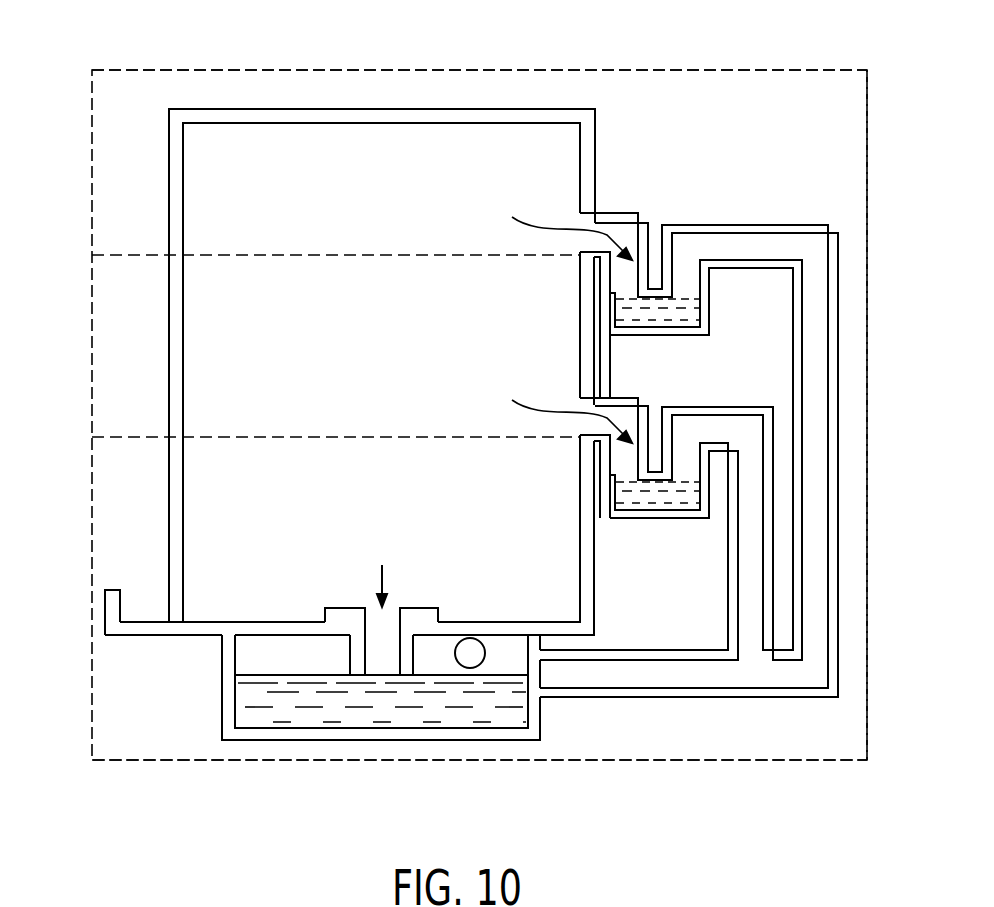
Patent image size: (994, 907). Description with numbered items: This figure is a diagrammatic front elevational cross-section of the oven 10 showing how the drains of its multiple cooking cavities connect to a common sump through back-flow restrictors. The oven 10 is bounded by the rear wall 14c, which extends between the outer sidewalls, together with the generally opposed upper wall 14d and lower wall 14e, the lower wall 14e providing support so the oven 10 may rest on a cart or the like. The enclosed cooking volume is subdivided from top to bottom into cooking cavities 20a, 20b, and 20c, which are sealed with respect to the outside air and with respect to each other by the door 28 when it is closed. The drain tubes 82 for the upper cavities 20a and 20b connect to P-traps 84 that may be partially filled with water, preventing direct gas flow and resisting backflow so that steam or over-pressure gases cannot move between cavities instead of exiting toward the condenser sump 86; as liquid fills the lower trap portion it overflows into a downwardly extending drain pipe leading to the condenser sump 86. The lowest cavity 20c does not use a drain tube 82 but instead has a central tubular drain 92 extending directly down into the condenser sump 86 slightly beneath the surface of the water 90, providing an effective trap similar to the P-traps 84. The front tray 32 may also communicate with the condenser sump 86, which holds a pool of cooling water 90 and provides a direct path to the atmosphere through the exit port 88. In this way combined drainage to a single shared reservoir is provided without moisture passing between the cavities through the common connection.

The oven 10 is at (835, 61).
The rear wall 14c is at (867, 160).
The upper wall 14d is at (480, 68).
The lower wall 14e is at (537, 762).
The cooking cavity 20a is at (537, 178).
The cooking cavity 20b is at (537, 315).
The cooking cavity 20c is at (537, 490).
The door 28 is at (117, 227).
The front tray 32 is at (105, 612).
The drain tube 82 is at (615, 213).
The P-trap 84 is at (655, 337).
The condenser sump 86 is at (543, 718).
The exit port 88 is at (458, 636).
The water 90 is at (253, 717).
The central tubular drain 92 is at (347, 608).